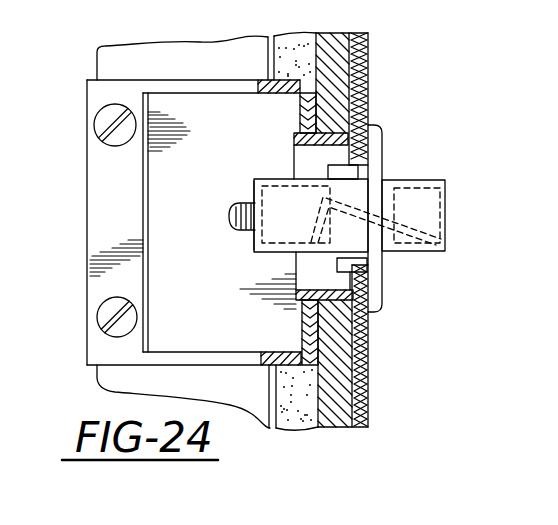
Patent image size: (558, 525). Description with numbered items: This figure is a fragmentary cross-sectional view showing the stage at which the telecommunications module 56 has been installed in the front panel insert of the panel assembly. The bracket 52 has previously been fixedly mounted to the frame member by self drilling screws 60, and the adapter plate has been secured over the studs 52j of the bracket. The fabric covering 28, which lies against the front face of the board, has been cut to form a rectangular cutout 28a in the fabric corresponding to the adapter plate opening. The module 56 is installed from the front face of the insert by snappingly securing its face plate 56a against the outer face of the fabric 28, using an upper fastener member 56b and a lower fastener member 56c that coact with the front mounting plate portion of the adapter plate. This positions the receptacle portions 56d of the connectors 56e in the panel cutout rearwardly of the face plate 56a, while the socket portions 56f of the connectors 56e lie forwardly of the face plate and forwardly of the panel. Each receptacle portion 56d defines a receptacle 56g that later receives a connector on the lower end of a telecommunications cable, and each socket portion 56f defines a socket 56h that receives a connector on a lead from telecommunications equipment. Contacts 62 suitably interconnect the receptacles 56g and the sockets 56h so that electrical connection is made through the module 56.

The fabric covering 28 is at (184, 98).
The rectangular cutout in the fabric 28a is at (184, 309).
The bracket 52 is at (68, 232).
The studs 52j is at (231, 206).
The telecommunications module 56 is at (398, 96).
The face plate 56a is at (383, 289).
The upper fastener member 56b is at (320, 158).
The lower fastener member 56c is at (337, 270).
The receptacle portion 56d is at (253, 250).
The connector 56e is at (236, 243).
The socket portion 56f is at (424, 198).
The receptacle 56g is at (278, 193).
The socket 56h is at (447, 237).
The self drilling screws 60 is at (107, 114).
The contacts 62 is at (360, 185).